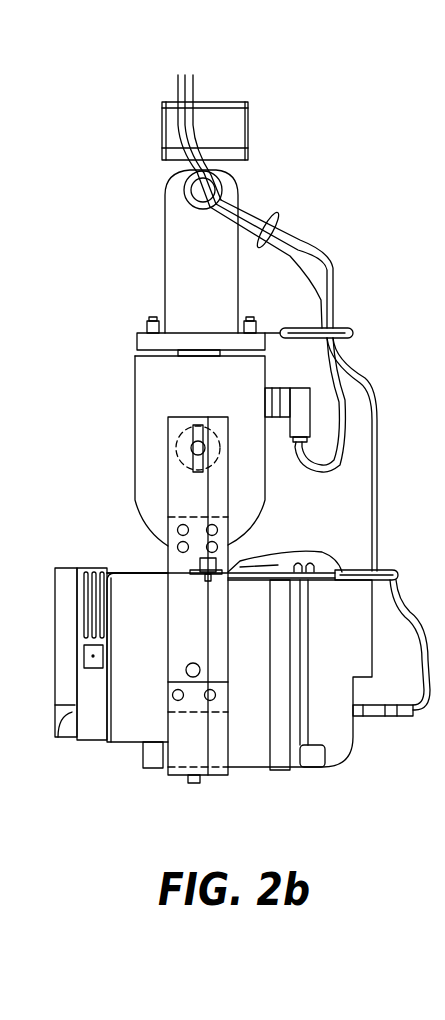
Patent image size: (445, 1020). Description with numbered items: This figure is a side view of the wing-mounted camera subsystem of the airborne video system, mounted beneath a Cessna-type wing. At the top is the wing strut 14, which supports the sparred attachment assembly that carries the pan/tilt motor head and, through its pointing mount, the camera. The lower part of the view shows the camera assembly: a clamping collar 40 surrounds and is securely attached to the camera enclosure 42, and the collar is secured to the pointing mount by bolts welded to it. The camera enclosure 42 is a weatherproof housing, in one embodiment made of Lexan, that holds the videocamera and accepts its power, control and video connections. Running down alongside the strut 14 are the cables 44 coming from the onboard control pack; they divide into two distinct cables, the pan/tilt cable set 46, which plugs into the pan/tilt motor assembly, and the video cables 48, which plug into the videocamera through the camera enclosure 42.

The strut 14 is at (218, 115).
The clamping collar 40 is at (190, 745).
The camera enclosure 42 is at (340, 746).
The cables 44 is at (280, 218).
The pan/tilt cable set 46 is at (340, 406).
The video cables 48 is at (400, 608).